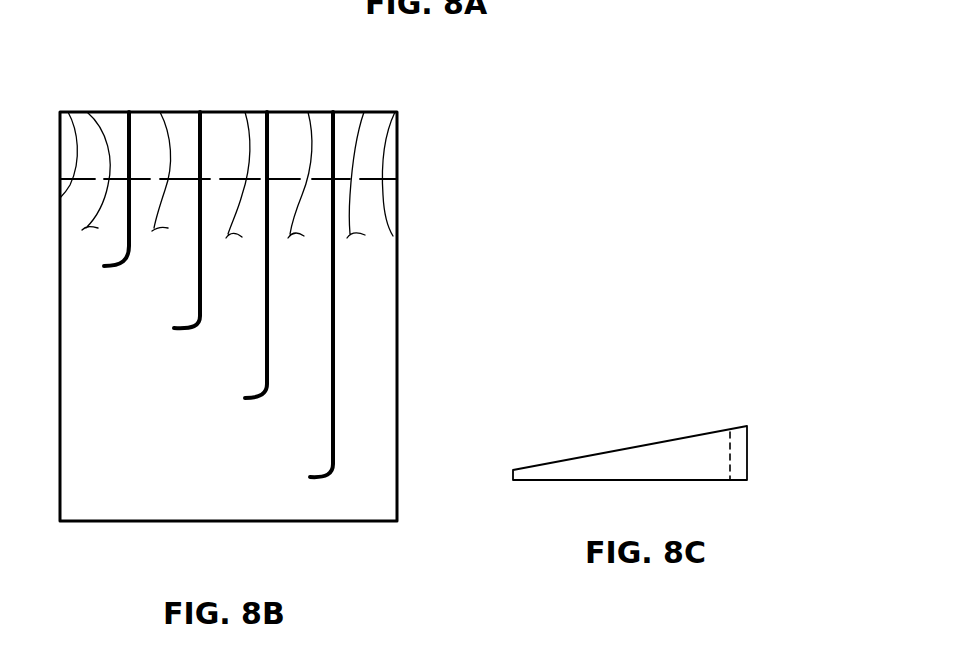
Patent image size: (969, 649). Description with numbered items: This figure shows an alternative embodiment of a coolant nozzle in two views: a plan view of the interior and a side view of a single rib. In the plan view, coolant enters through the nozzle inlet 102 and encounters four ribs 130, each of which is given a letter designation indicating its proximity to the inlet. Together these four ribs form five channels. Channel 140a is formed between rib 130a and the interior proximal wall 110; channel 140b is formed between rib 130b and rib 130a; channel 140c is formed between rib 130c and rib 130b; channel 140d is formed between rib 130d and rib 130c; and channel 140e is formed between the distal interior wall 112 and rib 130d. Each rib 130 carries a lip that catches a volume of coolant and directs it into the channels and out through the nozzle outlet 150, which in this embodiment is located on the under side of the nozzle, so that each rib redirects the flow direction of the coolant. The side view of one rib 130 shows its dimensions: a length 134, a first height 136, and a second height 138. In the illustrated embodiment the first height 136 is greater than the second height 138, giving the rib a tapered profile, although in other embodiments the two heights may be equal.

In FIG. 8B, the nozzle inlet 102 is at (42, 305).
In FIG. 8B, the interior proximal wall 110 is at (63, 110).
In FIG. 8B, the distal interior wall 112 is at (395, 112).
In FIG. 8C, the rib 130 is at (538, 503).
In FIG. 8B, the rib 130a is at (129, 112).
In FIG. 8B, the rib 130b is at (200, 112).
In FIG. 8B, the rib 130c is at (267, 112).
In FIG. 8B, the rib 130d is at (333, 112).
In FIG. 8C, the length 134 is at (747, 367).
In FIG. 8C, the first height 136 is at (755, 426).
In FIG. 8C, the second height 138 is at (503, 496).
In FIG. 8B, the channel 140a is at (87, 112).
In FIG. 8B, the channel 140b is at (160, 112).
In FIG. 8B, the channel 140c is at (245, 112).
In FIG. 8B, the channel 140d is at (308, 112).
In FIG. 8B, the channel 140e is at (364, 112).
In FIG. 8B, the nozzle outlet 150 is at (411, 152).